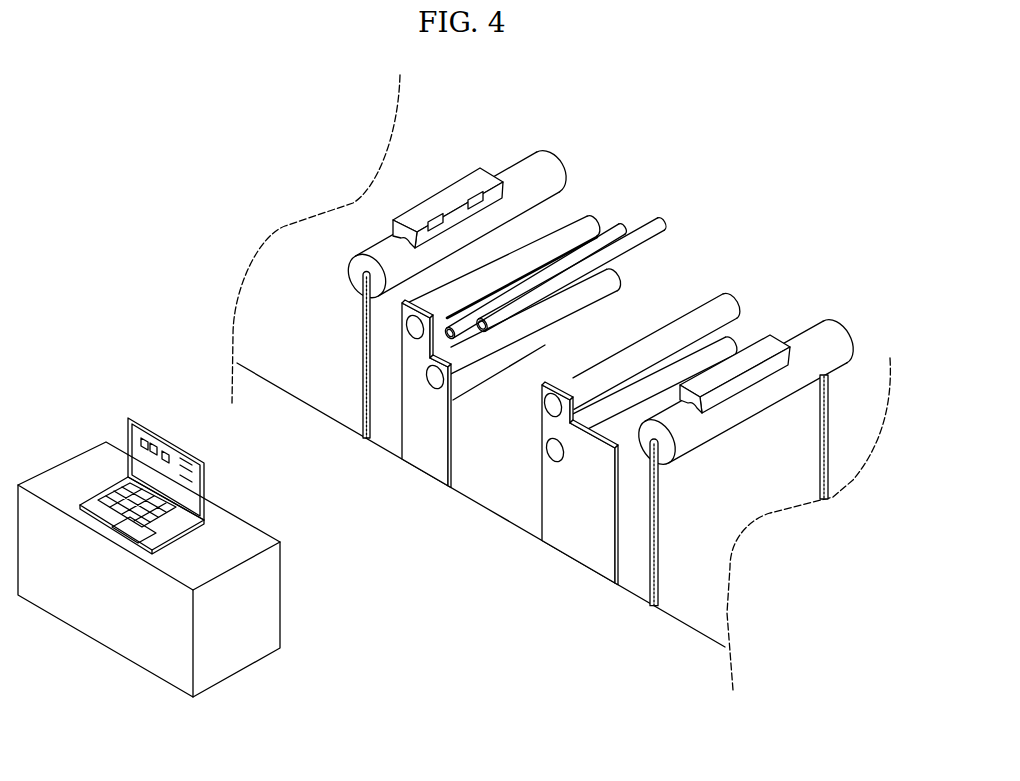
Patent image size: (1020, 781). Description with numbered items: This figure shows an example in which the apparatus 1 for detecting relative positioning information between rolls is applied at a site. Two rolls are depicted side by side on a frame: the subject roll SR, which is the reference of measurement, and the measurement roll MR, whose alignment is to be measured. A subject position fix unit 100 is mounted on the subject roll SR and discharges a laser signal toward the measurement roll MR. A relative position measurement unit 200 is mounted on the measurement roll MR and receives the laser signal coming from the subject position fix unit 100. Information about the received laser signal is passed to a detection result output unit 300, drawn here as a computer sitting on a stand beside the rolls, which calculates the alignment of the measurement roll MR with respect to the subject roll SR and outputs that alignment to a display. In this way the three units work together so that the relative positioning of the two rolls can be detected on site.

The apparatus for detecting relative positioning information between rolls 1 is at (319, 118).
The subject position fix unit 100 is at (468, 160).
The relative position measurement unit 200 is at (775, 325).
The detection result output unit 300 is at (112, 408).
The subject roll SR is at (538, 163).
The measurement roll MR is at (825, 328).